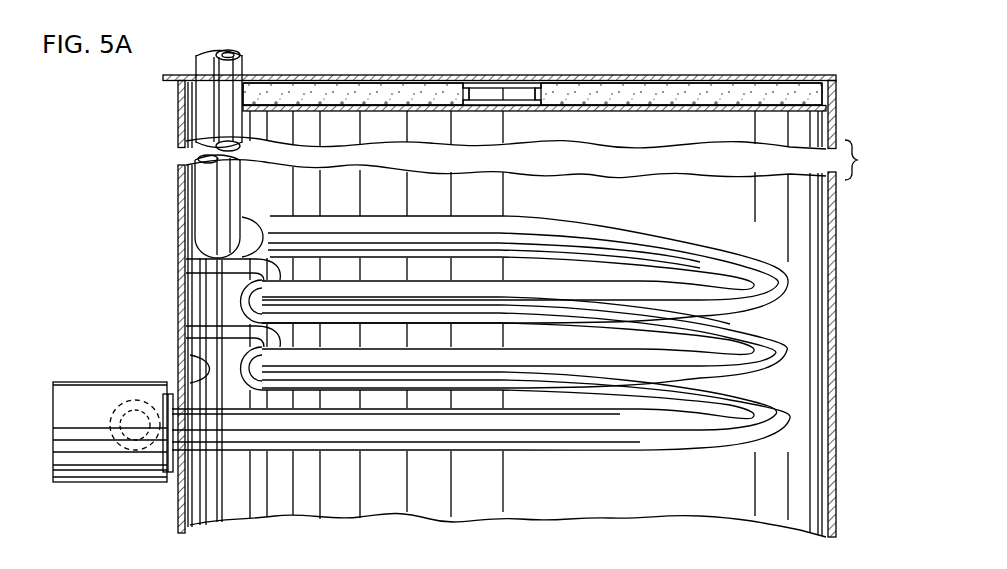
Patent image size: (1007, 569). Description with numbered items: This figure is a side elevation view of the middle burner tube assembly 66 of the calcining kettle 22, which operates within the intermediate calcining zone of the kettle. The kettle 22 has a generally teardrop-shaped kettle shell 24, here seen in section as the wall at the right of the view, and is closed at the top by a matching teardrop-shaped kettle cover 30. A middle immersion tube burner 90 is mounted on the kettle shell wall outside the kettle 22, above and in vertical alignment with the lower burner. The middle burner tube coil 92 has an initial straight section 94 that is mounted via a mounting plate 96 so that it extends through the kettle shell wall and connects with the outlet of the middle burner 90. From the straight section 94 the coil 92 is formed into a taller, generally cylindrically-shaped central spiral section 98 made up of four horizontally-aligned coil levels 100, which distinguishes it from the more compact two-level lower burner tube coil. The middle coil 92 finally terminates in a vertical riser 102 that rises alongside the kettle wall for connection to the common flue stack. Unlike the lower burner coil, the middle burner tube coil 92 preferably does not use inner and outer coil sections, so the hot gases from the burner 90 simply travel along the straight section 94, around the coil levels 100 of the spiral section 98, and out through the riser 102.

The calcining kettle 22 is at (838, 298).
The kettle shell 24 is at (837, 452).
The kettle cover 30 is at (549, 89).
The middle burner tube assembly 66 is at (214, 300).
The middle immersion tube burner 90 is at (84, 458).
The middle burner tube coil 92 is at (738, 241).
The initial straight section 94 is at (305, 440).
The mounting plate 96 is at (207, 377).
The central spiral section 98 is at (796, 345).
The coil levels 100 is at (240, 270).
The vertical riser 102 is at (207, 115).